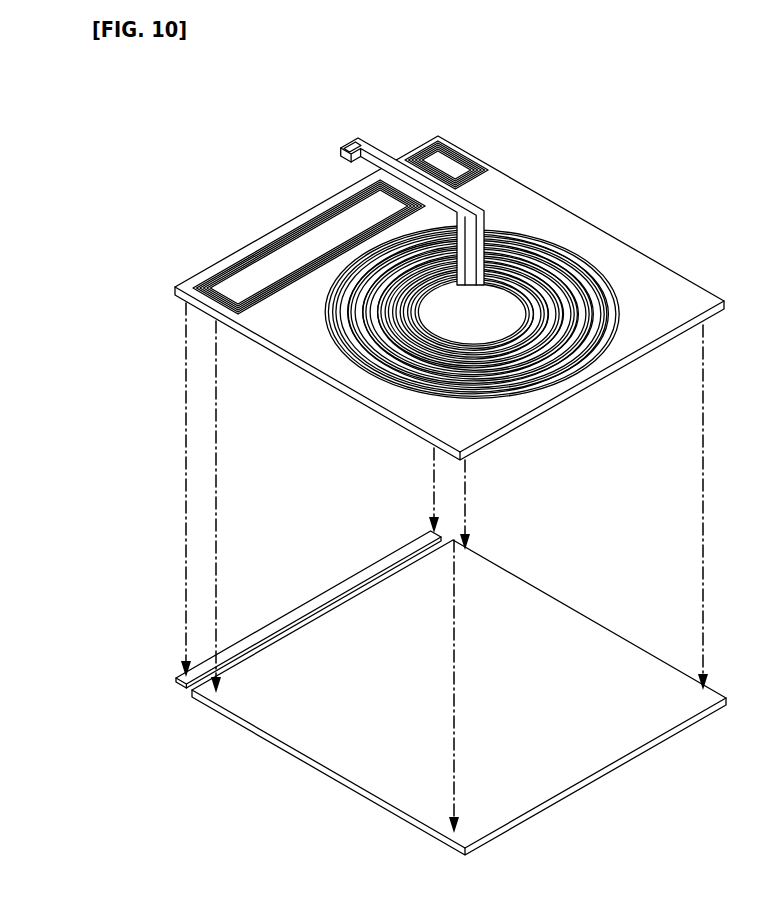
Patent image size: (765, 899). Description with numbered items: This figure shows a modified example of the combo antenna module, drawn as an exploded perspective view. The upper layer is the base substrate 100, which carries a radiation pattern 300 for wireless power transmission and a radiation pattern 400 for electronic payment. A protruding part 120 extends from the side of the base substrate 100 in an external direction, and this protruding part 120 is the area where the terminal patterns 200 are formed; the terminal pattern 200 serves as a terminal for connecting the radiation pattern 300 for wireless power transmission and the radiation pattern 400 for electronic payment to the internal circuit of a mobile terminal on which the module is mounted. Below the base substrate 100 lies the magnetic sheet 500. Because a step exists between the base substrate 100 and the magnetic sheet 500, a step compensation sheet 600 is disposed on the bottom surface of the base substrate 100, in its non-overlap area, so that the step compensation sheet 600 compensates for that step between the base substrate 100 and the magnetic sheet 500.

The base substrate 100 is at (175, 288).
The protruding part 120 is at (351, 141).
The terminal pattern 200 is at (370, 139).
The radiation pattern for wireless power transmission 300 is at (597, 360).
The radiation pattern for electronic payment 400 is at (285, 234).
The magnetic sheet 500 is at (312, 768).
The step compensation sheet 600 is at (176, 688).